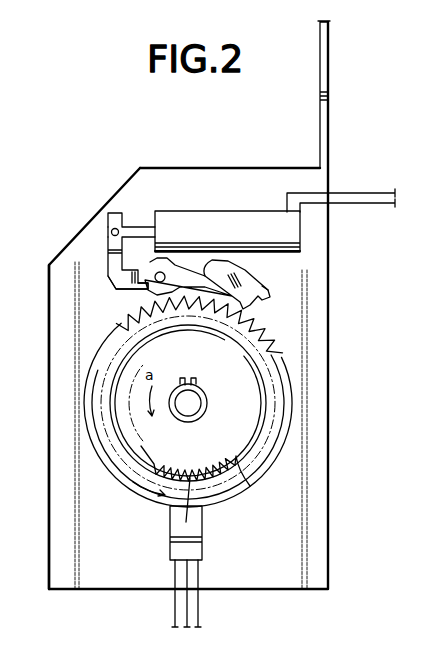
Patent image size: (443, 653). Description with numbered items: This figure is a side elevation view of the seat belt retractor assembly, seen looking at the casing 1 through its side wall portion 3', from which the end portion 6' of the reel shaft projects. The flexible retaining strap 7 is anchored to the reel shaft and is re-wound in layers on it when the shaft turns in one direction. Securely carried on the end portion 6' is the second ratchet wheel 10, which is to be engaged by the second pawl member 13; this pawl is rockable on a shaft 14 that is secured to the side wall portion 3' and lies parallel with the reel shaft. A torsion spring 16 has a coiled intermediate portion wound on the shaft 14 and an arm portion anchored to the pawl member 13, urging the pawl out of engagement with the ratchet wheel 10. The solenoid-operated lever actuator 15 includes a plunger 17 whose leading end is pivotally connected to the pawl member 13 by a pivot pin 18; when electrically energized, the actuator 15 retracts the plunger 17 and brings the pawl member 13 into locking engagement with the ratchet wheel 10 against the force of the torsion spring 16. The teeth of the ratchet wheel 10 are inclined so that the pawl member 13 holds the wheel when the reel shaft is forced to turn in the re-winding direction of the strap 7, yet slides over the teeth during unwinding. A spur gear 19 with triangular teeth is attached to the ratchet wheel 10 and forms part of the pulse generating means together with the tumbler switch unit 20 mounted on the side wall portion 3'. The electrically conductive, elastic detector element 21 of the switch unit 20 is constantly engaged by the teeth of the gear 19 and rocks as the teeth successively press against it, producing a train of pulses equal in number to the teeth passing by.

The casing 1 is at (338, 504).
The side wall portion 3' is at (32, 427).
The retaining strap 7 is at (319, 86).
The solenoid-operated lever actuator 15 is at (232, 211).
The plunger 17 is at (142, 226).
The pivot pin 18 is at (111, 233).
The shaft 14 is at (140, 291).
The second pawl member 13 is at (270, 296).
The torsion spring 16 is at (228, 263).
The second ratchet wheel 10 is at (271, 331).
The end portion of the reel shaft 6' is at (204, 400).
The spur gear 19 is at (250, 486).
The detector element 21 is at (178, 512).
The tumbler switch unit 20 is at (203, 551).